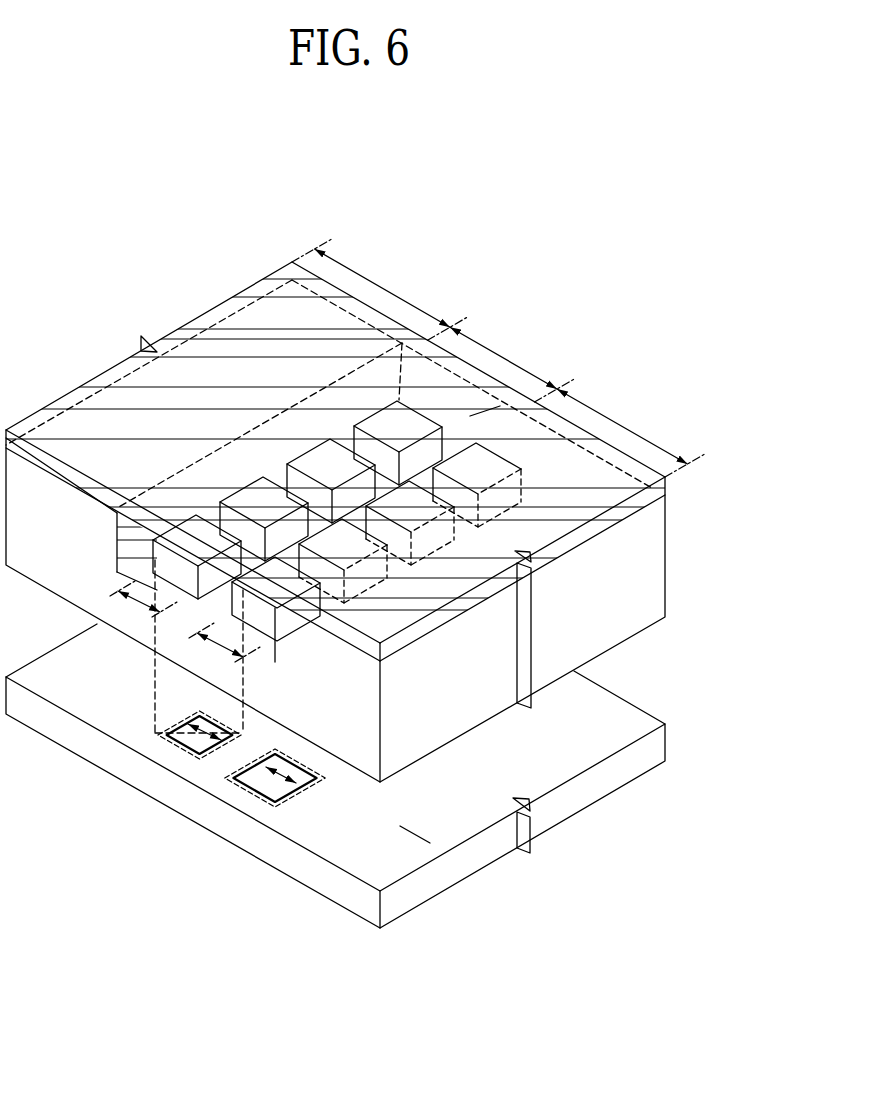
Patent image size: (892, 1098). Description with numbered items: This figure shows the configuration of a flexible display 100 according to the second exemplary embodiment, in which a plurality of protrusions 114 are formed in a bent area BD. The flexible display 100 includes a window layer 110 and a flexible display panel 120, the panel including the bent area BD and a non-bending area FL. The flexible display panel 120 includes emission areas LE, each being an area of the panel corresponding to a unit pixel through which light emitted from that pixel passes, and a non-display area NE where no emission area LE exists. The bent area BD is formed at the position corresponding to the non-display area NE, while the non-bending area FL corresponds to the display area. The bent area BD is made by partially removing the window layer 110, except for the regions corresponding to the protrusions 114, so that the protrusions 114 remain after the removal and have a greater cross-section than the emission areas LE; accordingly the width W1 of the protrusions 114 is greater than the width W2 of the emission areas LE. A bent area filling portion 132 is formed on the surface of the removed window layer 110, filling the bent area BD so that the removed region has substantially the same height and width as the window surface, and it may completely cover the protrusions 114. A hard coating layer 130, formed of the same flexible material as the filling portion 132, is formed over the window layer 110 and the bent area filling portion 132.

The flexible display 100 is at (252, 210).
The window layer 110 is at (650, 575).
The protrusions 114 is at (322, 462).
The flexible display panel 120 is at (637, 722).
The hard coating layer 130 is at (632, 508).
The bent area filling portion 132 is at (498, 422).
The emission area LE is at (278, 788).
The non-display area NE is at (390, 820).
The non-bending area FL is at (498, 358).
The bent area BD is at (503, 358).
The width of the protrusions W1 is at (185, 630).
The width of the emission areas W2 is at (203, 729).